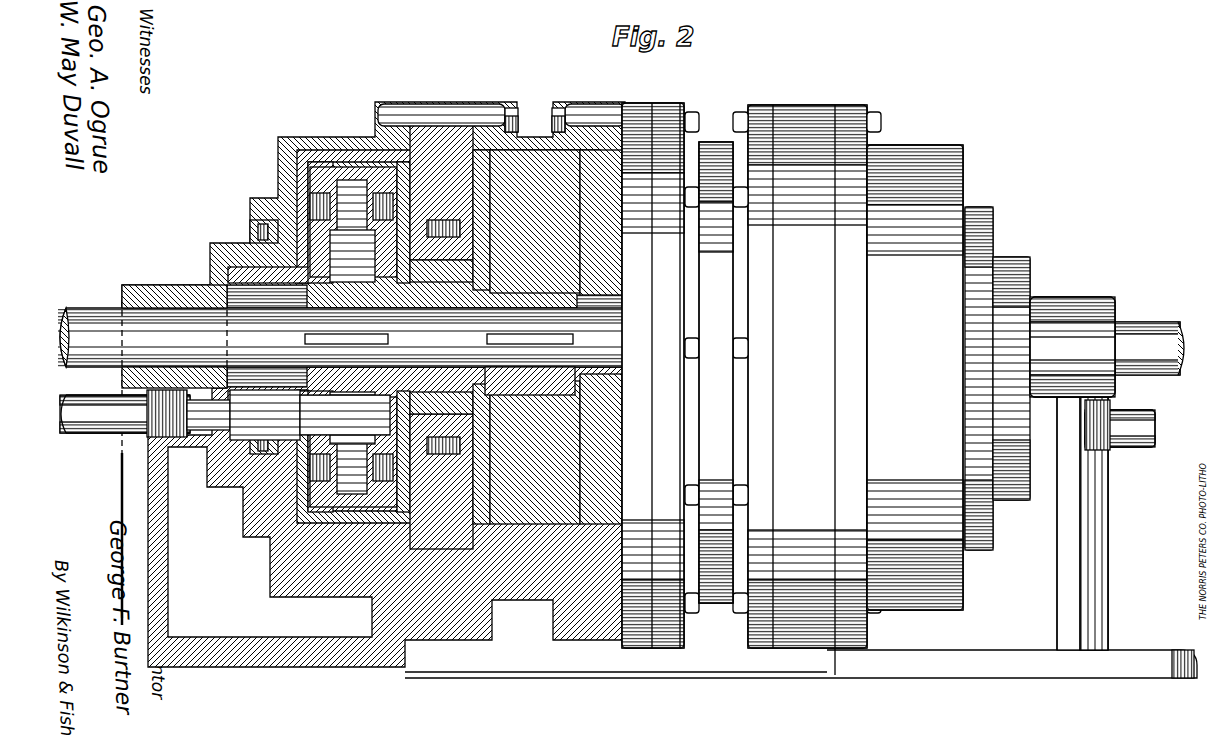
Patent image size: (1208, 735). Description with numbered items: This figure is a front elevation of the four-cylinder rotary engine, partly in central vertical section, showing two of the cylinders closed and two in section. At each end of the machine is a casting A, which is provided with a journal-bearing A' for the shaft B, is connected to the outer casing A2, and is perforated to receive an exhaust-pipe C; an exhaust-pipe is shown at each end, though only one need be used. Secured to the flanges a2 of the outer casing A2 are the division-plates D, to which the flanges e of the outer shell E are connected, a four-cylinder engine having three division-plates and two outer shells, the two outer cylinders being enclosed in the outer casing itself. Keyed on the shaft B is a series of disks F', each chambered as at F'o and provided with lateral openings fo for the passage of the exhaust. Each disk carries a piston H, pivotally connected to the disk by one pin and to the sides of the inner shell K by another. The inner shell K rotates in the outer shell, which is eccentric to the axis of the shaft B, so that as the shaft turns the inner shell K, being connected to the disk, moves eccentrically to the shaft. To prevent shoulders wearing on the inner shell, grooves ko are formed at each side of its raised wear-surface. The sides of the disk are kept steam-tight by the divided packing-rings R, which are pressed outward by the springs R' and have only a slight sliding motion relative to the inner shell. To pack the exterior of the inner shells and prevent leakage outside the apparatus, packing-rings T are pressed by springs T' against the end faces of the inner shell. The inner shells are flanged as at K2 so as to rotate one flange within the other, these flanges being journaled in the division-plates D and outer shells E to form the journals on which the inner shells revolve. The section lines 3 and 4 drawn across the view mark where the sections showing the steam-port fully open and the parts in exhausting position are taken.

The casting A is at (641, 522).
The journal-bearing A' is at (618, 325).
The outer casing A2 is at (300, 145).
The shaft B is at (140, 330).
The exhaust-pipe C is at (80, 428).
The division-plates D is at (452, 128).
The outer shell E is at (514, 620).
The flanges of the outer shell e is at (690, 632).
The disk F' is at (437, 401).
The chamber of the disk F'o is at (445, 337).
The lateral openings fo is at (268, 440).
The piston H is at (612, 158).
The inner shell K is at (285, 262).
The flange of the inner shell K2 is at (621, 337).
The grooves ko is at (360, 152).
The divided packing-rings R is at (383, 288).
The springs R' is at (421, 321).
The packing-rings T is at (451, 360).
The springs T' is at (455, 346).
The flanges of the outer casing a2 is at (410, 114).
The section line 3 3 is at (528, 710).
The section line 4 4 is at (480, 710).